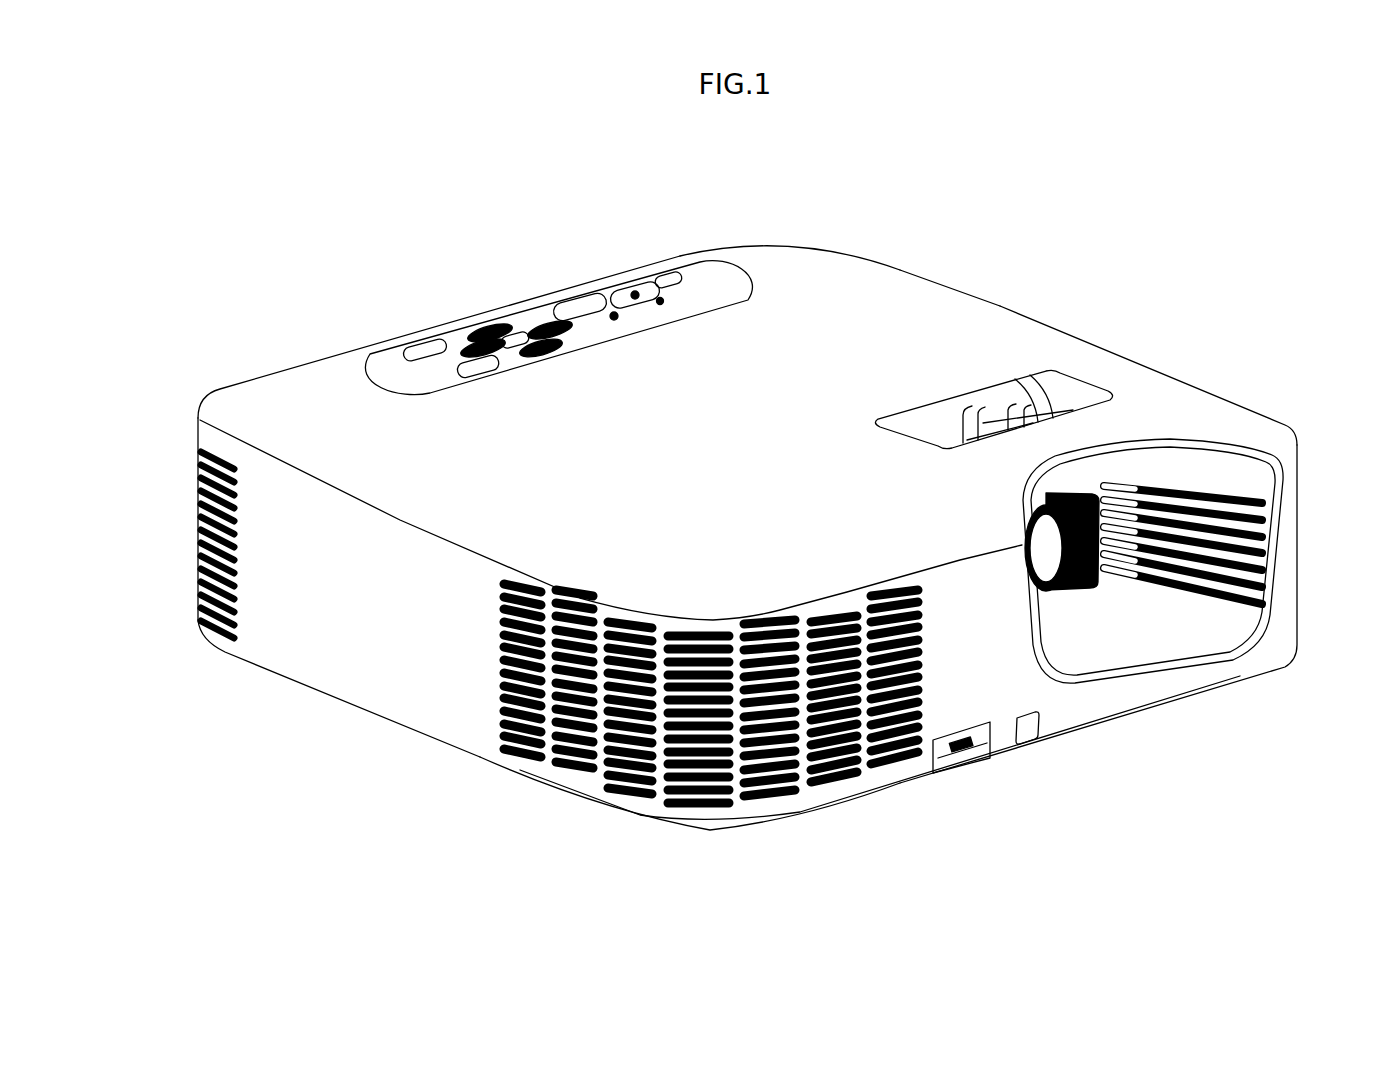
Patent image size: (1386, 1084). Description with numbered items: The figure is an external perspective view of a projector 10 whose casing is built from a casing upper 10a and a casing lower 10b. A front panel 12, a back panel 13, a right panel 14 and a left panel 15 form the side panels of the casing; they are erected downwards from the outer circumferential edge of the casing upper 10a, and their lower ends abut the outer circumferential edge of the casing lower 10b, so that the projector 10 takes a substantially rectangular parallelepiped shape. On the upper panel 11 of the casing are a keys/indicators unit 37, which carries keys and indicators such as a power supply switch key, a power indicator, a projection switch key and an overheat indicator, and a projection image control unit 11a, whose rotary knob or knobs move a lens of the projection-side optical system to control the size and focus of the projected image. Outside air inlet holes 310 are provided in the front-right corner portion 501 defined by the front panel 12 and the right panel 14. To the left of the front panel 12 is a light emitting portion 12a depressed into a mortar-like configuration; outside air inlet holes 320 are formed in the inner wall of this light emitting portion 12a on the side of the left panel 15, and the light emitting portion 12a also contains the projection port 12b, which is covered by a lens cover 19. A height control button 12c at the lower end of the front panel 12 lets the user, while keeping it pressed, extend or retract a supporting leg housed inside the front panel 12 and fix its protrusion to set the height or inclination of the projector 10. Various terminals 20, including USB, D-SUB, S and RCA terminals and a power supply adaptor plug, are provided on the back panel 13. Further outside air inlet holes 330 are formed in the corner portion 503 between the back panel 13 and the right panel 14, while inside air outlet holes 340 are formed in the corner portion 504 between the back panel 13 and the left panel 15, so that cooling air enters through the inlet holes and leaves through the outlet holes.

The projector 10 is at (273, 245).
The casing upper 10a is at (283, 385).
The casing lower 10b is at (238, 658).
The upper panel 11 is at (853, 290).
The projection image control unit 11a is at (981, 413).
The front panel 12 is at (1063, 713).
The light emitting portion 12a is at (1205, 475).
The projection port 12b is at (1090, 488).
The height control button 12c is at (958, 767).
The back panel 13 is at (345, 348).
The right panel 14 is at (337, 667).
The left panel 15 is at (1192, 380).
The lens cover 19 is at (1072, 587).
The terminals 20 is at (466, 297).
The keys/indicators unit 37 is at (703, 287).
The outside air inlet holes 310 is at (680, 808).
The outside air inlet holes 320 is at (1223, 495).
The outside air inlet holes 330 is at (198, 465).
The inside air outlet holes 340 is at (829, 231).
The front-right corner portion 501 is at (765, 848).
The corner portion 503 is at (180, 392).
The corner portion 504 is at (848, 233).